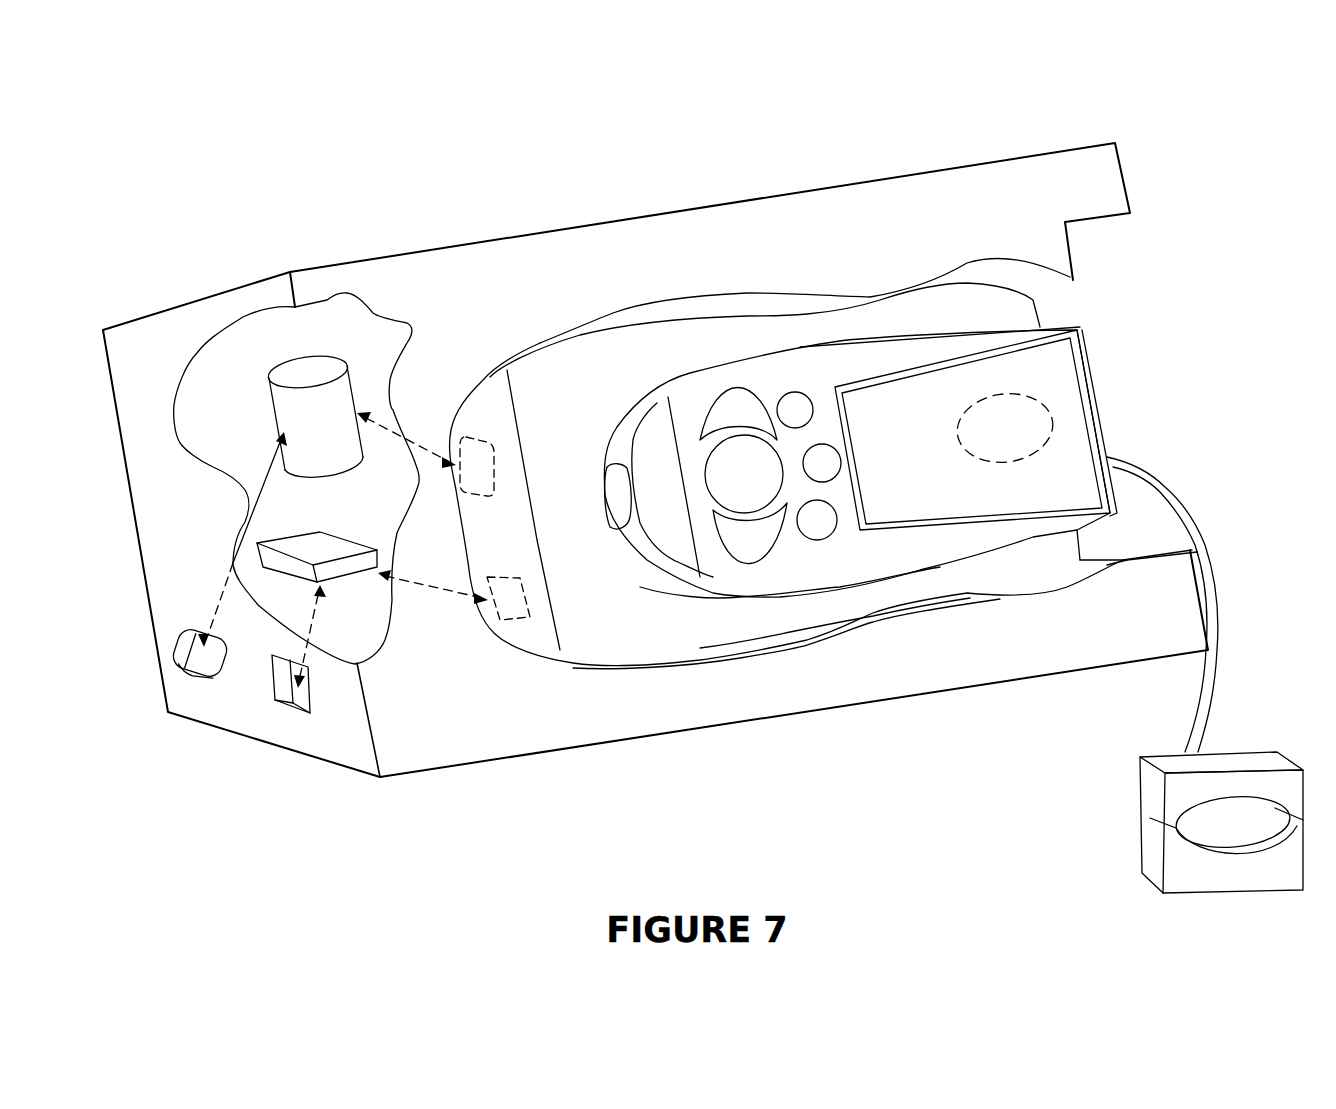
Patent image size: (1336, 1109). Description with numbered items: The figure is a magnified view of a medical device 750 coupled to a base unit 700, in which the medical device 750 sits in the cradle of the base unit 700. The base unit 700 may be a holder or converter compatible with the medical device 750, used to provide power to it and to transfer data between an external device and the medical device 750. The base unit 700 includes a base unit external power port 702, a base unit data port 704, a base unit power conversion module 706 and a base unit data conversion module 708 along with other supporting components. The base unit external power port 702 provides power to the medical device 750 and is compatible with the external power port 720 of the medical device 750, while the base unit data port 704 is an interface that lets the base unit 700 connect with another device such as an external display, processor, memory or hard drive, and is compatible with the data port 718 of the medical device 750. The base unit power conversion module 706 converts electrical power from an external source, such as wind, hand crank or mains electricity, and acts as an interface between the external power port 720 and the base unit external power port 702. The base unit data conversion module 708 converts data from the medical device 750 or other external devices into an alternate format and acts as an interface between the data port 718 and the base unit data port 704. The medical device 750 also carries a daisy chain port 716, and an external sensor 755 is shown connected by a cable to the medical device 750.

The base unit 700 is at (502, 738).
The base unit external power port 702 is at (303, 713).
The base unit data port 704 is at (217, 663).
The base unit power conversion module 706 is at (360, 533).
The base unit data conversion module 708 is at (268, 374).
The daisy chain port 716 is at (1045, 407).
The data port 718 is at (477, 433).
The external power port 720 is at (523, 623).
The medical device 750 is at (972, 307).
The external sensor 755 is at (1190, 783).